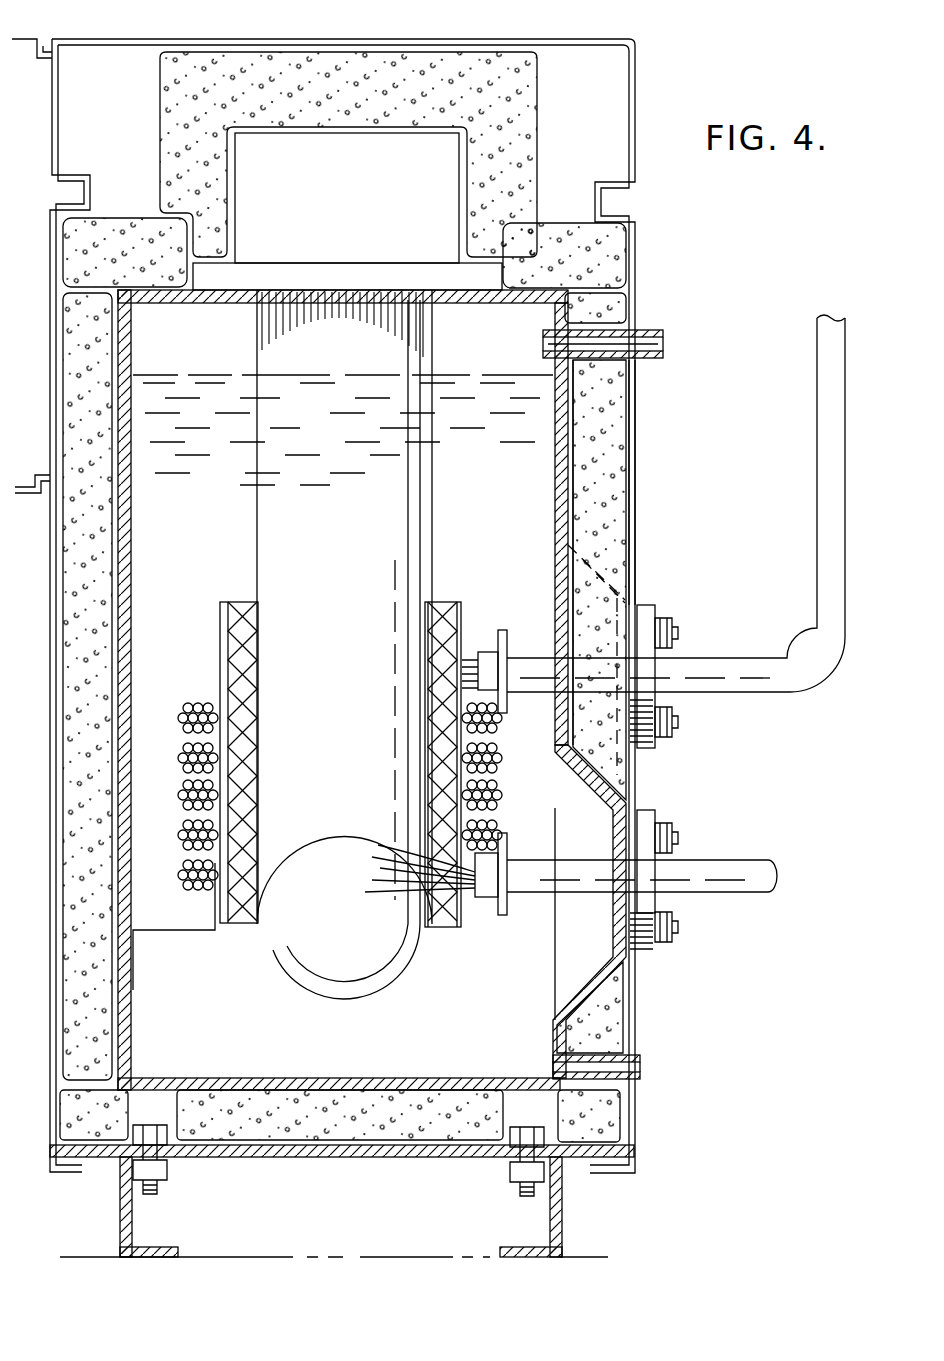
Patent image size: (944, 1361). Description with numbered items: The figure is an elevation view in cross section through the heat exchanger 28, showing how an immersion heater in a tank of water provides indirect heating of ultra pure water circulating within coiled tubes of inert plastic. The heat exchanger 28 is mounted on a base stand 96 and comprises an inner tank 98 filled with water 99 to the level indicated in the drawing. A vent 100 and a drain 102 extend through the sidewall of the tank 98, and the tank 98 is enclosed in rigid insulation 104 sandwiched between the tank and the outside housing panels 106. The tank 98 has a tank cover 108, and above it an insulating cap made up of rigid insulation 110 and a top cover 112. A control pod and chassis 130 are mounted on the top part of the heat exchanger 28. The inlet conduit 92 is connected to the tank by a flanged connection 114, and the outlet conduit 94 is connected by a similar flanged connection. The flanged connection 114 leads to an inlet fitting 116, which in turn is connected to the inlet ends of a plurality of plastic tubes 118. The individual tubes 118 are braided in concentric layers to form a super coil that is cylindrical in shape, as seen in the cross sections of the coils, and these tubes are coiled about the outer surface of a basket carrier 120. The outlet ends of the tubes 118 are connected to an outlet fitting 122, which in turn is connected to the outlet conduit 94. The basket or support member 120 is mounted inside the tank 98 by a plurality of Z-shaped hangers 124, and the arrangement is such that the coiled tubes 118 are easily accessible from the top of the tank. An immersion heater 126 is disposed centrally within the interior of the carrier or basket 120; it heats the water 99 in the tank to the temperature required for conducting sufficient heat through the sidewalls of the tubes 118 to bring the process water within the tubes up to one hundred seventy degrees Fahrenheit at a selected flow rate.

The control pod and chassis 130 is at (46, 28).
The top cover 112 is at (634, 83).
The heat exchanger 28 is at (720, 246).
The rigid insulation 110 is at (527, 128).
The tank cover 108 is at (502, 303).
The inner tank 98 is at (556, 458).
The rigid insulation 104 is at (618, 445).
The outside housing panels 106 is at (640, 504).
The vent 100 is at (653, 333).
The drain 102 is at (633, 1060).
The water 99 is at (200, 515).
The immersion heater 126 is at (270, 553).
The basket carrier 120 is at (462, 617).
The Z-shaped hangers 124 is at (160, 932).
The inlet fitting 116 is at (508, 642).
The inlet conduit 92 is at (818, 506).
The flanged connection 114 is at (650, 616).
The outlet conduit 94 is at (725, 868).
The plastic tubes 118 is at (380, 848).
The outlet fitting 122 is at (503, 915).
The base stand 96 is at (562, 1212).